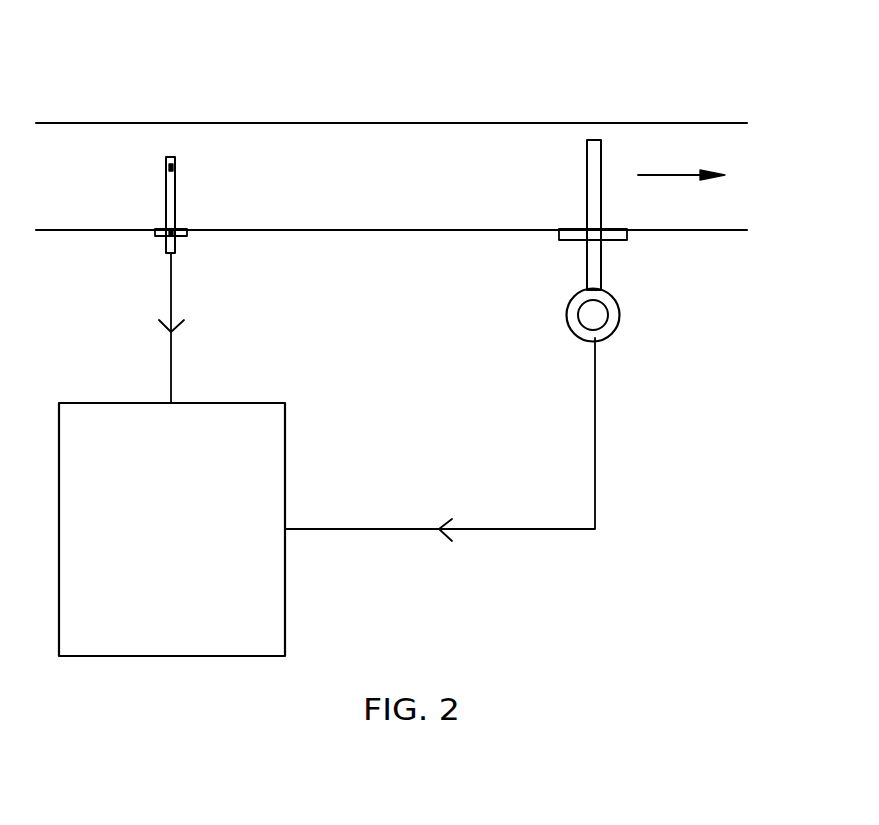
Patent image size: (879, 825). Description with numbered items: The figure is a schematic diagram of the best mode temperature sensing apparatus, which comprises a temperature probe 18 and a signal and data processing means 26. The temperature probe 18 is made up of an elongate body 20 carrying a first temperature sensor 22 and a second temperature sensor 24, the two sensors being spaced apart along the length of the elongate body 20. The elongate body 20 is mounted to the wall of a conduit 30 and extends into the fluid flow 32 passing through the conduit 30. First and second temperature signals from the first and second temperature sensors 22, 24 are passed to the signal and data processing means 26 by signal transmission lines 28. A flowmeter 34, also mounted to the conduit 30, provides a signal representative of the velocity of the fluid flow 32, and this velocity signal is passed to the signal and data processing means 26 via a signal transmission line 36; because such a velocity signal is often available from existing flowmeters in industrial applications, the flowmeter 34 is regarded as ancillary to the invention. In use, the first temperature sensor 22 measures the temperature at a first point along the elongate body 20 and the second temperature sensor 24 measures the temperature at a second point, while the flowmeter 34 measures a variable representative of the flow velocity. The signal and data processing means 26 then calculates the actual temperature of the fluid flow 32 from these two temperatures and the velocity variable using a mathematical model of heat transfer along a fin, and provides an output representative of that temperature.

The temperature probe 18 is at (176, 210).
The elongate body 20 is at (176, 205).
The first temperature sensor 22 is at (174, 168).
The second temperature sensor 24 is at (174, 237).
The signal and data processing means 26 is at (120, 656).
The signal transmission lines 28 is at (172, 357).
The conduit 30 is at (405, 122).
The fluid flow 32 is at (460, 203).
The flowmeter 34 is at (628, 258).
The signal transmission line 36 is at (525, 529).